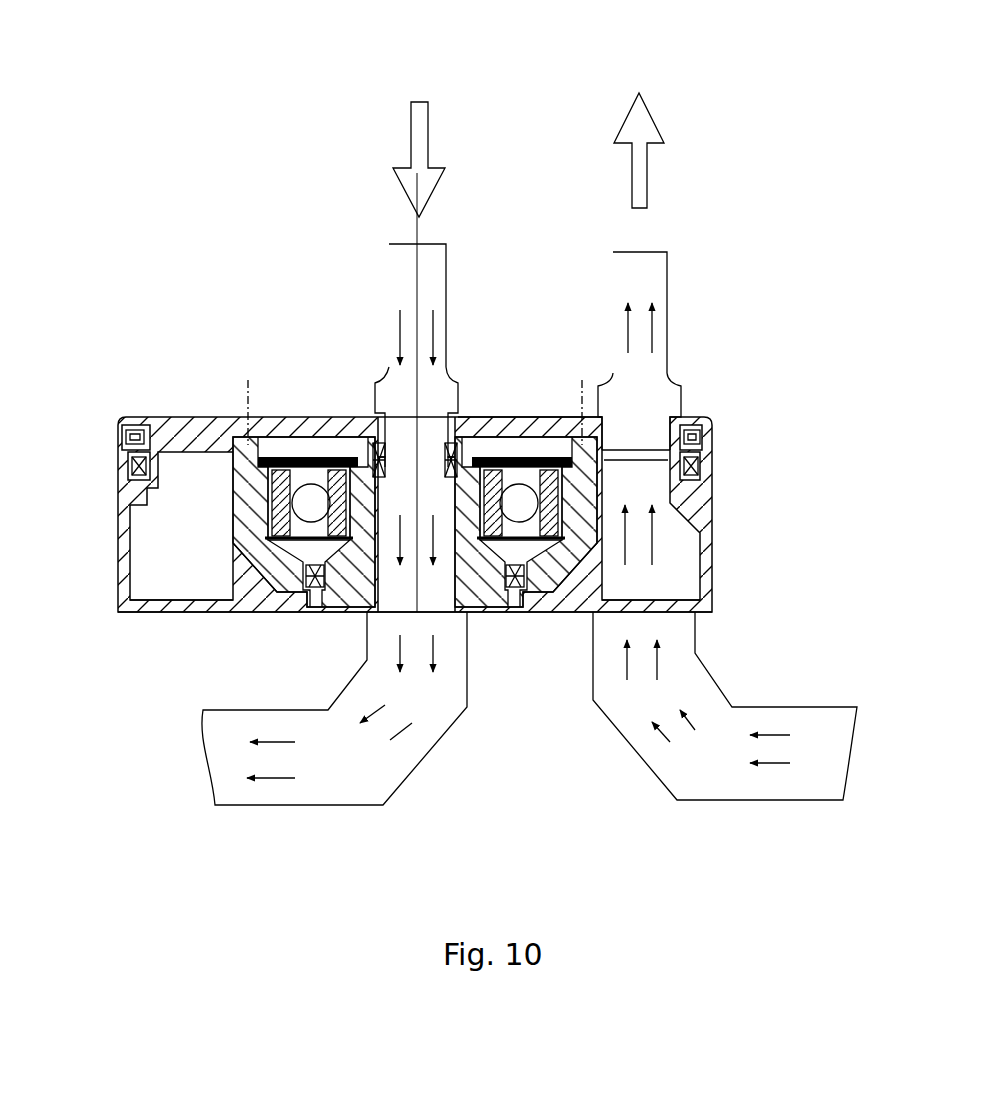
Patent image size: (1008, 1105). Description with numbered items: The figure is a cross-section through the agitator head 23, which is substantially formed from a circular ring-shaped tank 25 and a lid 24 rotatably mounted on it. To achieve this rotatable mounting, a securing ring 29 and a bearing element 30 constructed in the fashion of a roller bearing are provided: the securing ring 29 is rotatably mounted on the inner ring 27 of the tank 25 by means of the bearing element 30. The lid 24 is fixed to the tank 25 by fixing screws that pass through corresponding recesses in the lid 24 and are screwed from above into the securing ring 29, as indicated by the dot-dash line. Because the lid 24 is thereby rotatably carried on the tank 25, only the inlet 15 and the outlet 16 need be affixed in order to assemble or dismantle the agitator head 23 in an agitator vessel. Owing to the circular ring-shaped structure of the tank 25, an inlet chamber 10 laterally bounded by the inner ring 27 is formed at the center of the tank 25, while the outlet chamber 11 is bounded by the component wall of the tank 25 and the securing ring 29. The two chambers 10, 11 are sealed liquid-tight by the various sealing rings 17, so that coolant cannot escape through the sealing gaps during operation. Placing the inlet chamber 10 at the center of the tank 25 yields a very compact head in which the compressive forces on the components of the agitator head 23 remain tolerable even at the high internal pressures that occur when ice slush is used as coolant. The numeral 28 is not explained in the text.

The inlet chamber 10 is at (446, 602).
The outlet chamber 11 is at (210, 587).
The inlet 15 is at (430, 287).
The outlet 16 is at (655, 277).
The sealing ring 17 is at (373, 463).
The agitator head 23 is at (537, 150).
The lid 24 is at (535, 420).
The tank 25 is at (212, 612).
The inner ring 27 is at (372, 508).
The housing 28 is at (708, 535).
The securing ring 29 is at (243, 517).
The bearing element 30 is at (310, 500).